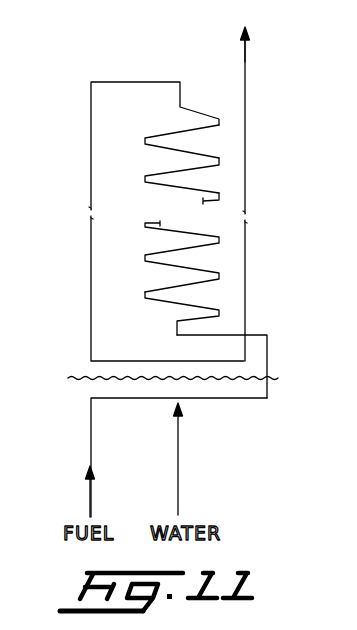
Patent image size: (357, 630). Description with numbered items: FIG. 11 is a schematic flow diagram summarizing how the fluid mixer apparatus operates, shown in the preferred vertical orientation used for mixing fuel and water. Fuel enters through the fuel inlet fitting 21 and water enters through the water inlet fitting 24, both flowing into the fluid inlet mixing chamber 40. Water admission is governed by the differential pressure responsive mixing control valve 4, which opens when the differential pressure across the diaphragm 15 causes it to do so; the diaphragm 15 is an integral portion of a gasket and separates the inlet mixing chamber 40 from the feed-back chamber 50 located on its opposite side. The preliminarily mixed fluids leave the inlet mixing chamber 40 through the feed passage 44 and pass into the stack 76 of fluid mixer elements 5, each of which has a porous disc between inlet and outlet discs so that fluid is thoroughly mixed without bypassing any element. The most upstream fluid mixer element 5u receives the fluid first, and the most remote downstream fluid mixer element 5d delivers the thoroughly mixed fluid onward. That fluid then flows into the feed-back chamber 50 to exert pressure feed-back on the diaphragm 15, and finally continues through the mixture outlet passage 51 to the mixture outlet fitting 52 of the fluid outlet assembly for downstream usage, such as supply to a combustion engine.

The control valve 4 is at (181, 400).
The fluid mixer elements 5 is at (236, 209).
The most remote fluid mixer element downstream 5d is at (237, 111).
The most upstream fluid mixer element 5u is at (233, 302).
The valve diaphragm 15 is at (280, 380).
The fuel inlet fitting 21 is at (90, 449).
The water inlet fitting 24 is at (178, 449).
The fluid inlet mixing chamber 40 is at (224, 393).
The feed passage 44 is at (267, 348).
The feed-back chamber 50 is at (80, 350).
The mixture outlet passage 51 is at (264, 194).
The mixture outlet fitting 52 is at (245, 62).
The stack of fluid mixer elements 76 is at (231, 178).